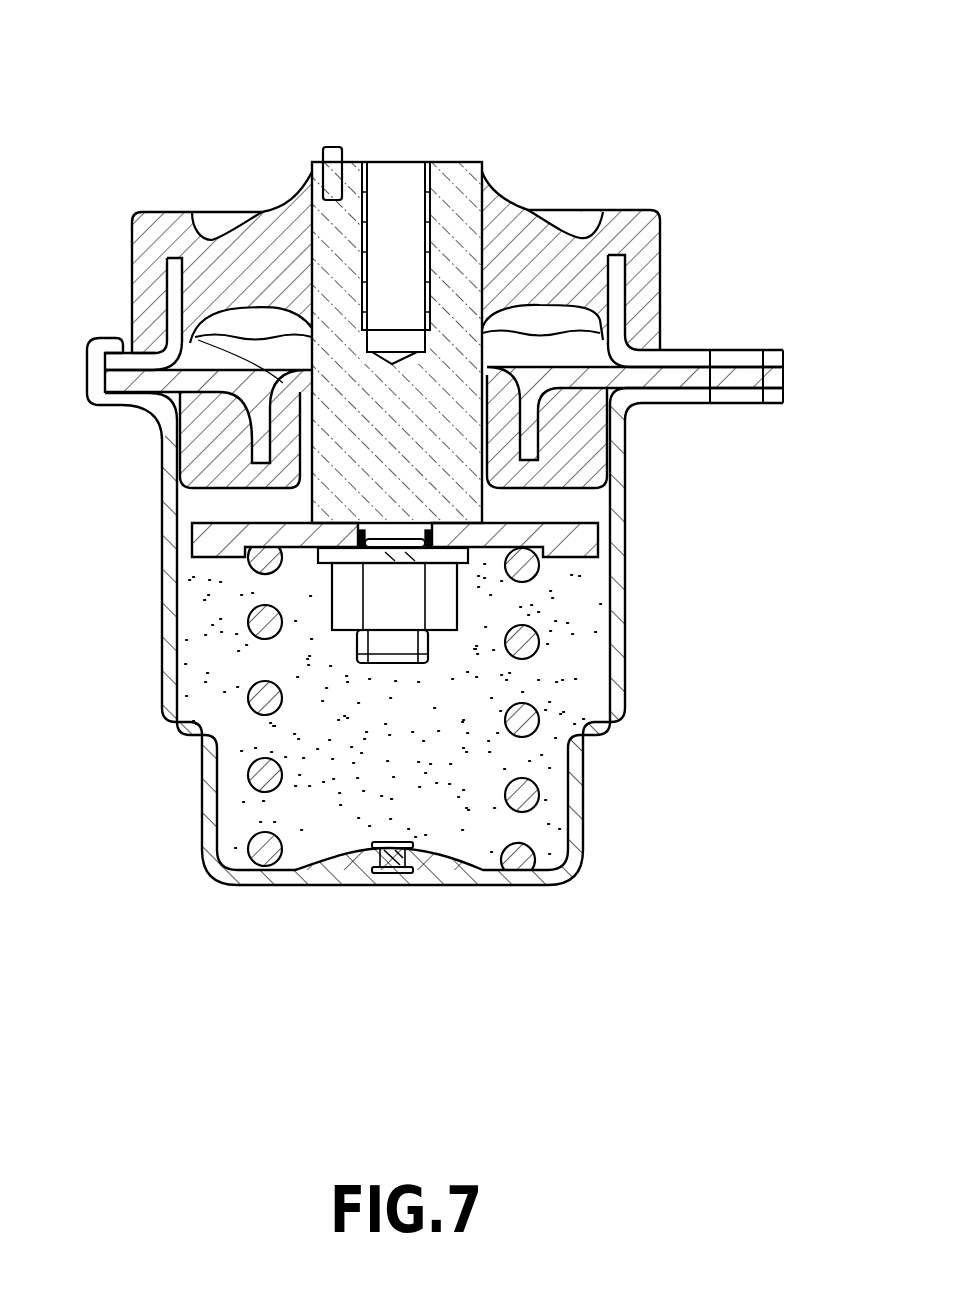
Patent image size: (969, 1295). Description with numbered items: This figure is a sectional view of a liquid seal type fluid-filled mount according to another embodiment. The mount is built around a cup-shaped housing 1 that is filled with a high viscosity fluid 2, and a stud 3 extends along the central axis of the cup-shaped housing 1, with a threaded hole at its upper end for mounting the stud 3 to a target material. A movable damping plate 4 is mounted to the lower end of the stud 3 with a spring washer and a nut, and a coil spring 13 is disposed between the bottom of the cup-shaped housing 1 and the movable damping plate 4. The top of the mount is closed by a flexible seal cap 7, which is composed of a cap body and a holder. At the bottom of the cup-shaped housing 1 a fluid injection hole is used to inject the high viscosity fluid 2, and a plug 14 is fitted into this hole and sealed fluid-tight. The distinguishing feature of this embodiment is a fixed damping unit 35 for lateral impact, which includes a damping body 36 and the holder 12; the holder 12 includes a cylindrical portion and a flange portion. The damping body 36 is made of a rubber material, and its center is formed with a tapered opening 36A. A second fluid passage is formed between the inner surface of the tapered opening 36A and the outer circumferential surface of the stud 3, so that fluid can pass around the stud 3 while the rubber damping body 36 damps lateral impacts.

The cup-shaped housing 1 is at (583, 813).
The high viscosity fluid 2 is at (332, 833).
The stud 3 is at (455, 192).
The movable damping plate 4 is at (598, 545).
The flexible seal cap 7 is at (245, 222).
The holder 12 is at (122, 412).
The coil spring 13 is at (252, 778).
The plug 14 is at (393, 875).
The fixed damping unit for lateral impact 35 is at (638, 447).
The damping body 36 is at (205, 322).
The tapered opening 36A is at (300, 498).